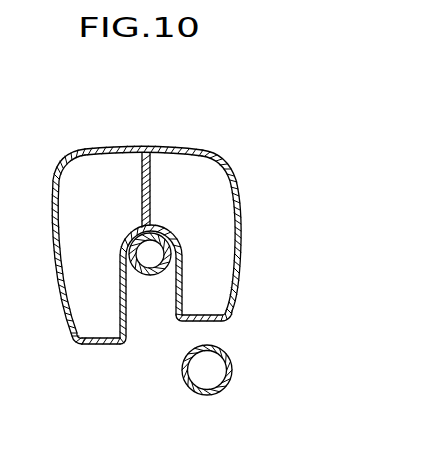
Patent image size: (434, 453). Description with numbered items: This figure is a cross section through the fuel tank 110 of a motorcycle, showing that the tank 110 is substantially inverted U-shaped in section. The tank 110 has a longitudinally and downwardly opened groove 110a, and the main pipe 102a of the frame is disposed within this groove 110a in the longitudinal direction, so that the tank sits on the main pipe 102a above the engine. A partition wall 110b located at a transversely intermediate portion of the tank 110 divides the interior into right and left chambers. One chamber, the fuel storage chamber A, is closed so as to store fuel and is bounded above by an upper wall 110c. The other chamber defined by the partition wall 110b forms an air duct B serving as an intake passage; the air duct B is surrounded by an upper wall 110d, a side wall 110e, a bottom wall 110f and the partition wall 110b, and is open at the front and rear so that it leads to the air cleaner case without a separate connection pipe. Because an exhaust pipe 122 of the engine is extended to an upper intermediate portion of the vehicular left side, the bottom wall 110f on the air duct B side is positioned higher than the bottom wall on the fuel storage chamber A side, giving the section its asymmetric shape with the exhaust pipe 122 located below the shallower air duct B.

The fuel tank 110 is at (173, 228).
The groove 110a is at (153, 246).
The partition wall 110b is at (142, 197).
The upper wall 110c is at (82, 151).
The upper wall 110d is at (194, 148).
The side wall 110e is at (243, 217).
The bottom wall 110f is at (230, 322).
The main pipe 102a is at (161, 274).
The exhaust pipe 122 is at (222, 389).
The fuel storage chamber A is at (80, 265).
The air duct B is at (222, 276).